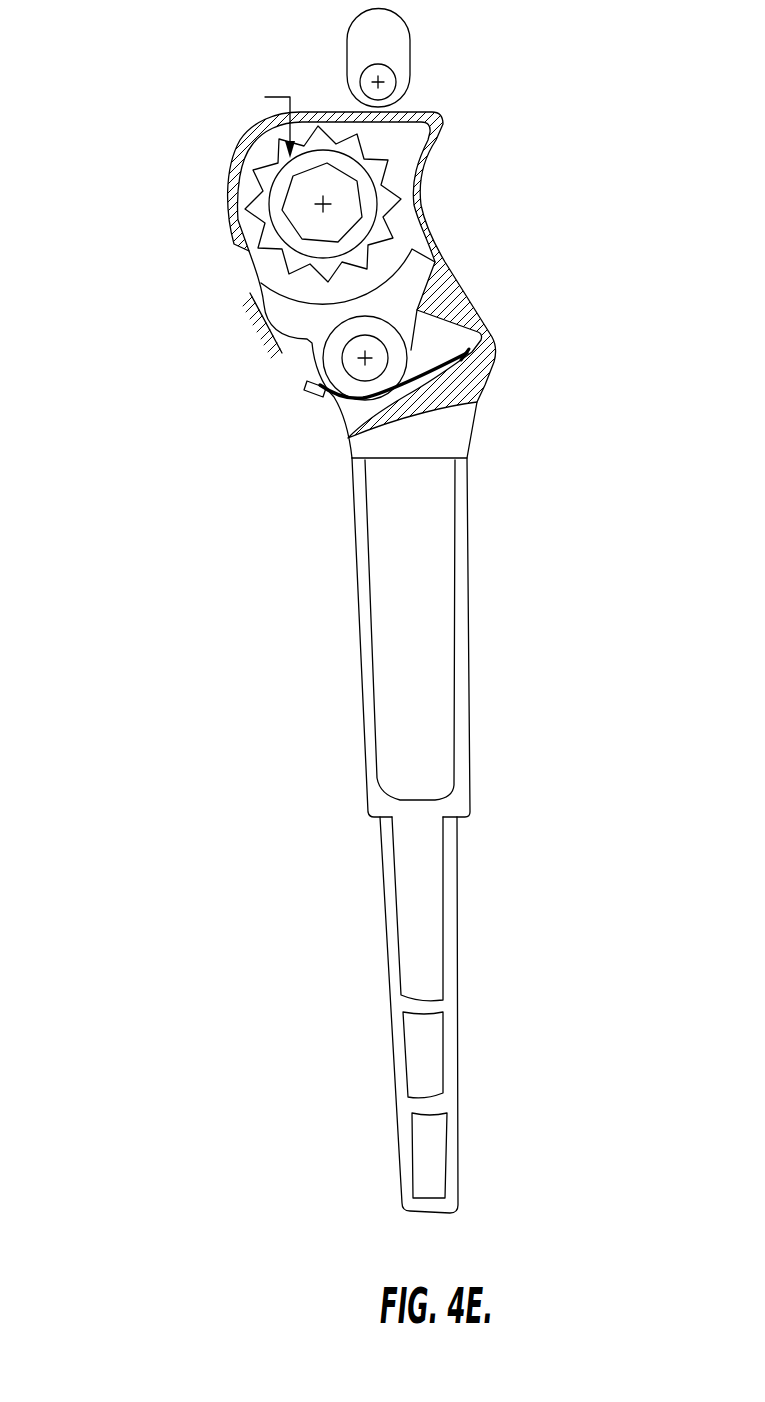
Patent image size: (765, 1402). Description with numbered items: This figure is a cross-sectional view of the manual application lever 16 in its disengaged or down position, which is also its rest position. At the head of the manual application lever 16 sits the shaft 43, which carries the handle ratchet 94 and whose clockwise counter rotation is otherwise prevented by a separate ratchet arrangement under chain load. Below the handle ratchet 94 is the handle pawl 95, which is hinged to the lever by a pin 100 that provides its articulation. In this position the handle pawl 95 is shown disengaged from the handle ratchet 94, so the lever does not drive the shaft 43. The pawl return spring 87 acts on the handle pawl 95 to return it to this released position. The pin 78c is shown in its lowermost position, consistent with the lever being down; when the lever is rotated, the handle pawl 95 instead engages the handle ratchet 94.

The pin 78c is at (362, 77).
The handle ratchet 94 is at (373, 157).
The shaft 43 is at (298, 197).
The handle pawl 95 is at (313, 327).
The pin 100 is at (357, 367).
The pawl return spring 87 is at (423, 373).
The manual application lever 16 is at (420, 725).